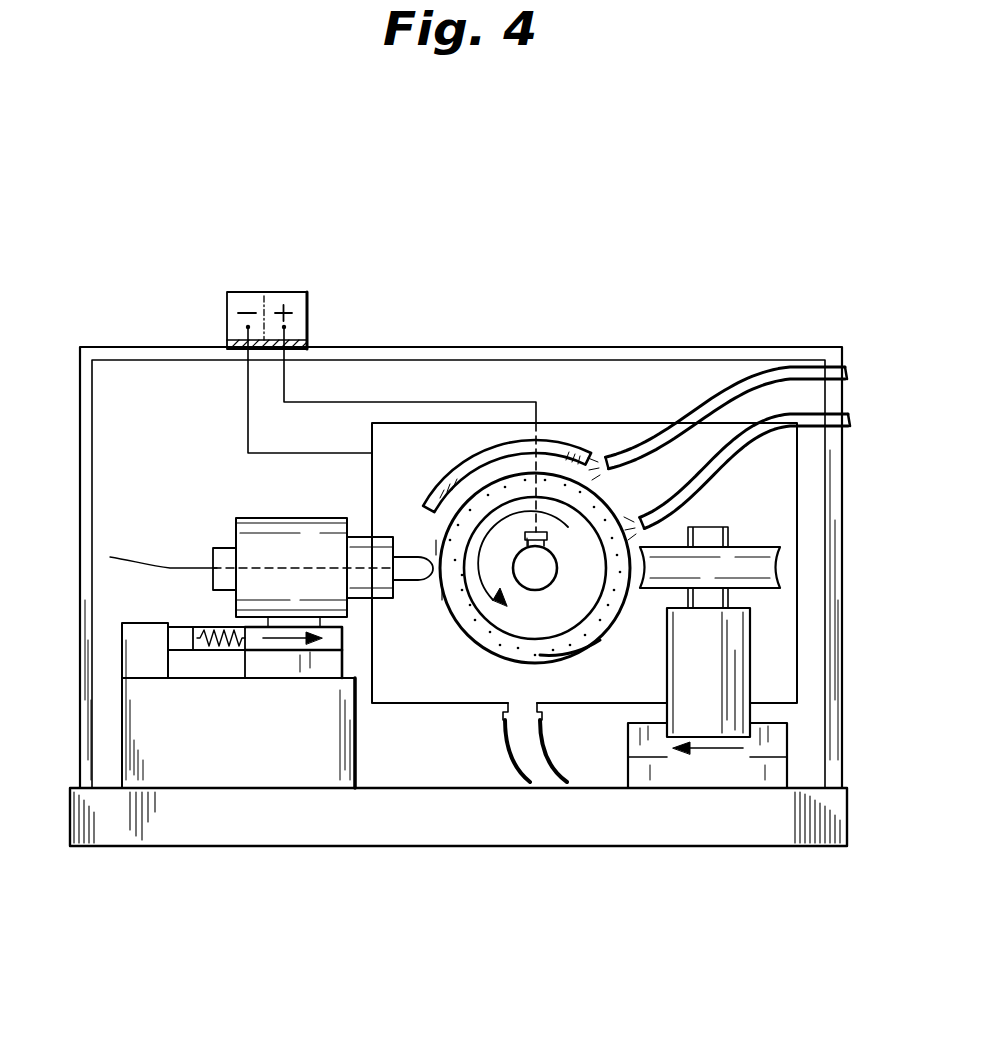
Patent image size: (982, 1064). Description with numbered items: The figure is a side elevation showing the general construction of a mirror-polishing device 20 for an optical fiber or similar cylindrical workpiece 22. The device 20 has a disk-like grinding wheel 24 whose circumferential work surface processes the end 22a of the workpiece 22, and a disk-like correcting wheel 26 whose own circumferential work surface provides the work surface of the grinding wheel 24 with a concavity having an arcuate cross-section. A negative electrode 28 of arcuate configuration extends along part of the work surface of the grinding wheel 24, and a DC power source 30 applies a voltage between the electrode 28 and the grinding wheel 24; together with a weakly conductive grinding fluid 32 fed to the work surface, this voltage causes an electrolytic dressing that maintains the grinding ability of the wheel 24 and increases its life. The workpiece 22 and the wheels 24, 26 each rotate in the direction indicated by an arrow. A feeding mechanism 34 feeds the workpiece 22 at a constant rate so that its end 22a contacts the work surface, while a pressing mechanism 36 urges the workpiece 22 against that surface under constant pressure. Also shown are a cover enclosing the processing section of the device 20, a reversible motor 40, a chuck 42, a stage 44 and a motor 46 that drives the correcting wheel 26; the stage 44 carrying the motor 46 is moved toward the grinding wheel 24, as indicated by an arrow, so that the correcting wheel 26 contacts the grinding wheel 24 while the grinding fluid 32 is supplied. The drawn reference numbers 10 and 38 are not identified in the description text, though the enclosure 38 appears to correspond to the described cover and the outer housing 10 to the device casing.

The housing 10 is at (147, 566).
The mirror-polishing device 20 is at (820, 232).
The workpiece 22 is at (432, 590).
The end of the workpiece 22a is at (432, 585).
The grinding wheel 24 is at (569, 662).
The correcting wheel 26 is at (655, 547).
The negative electrode 28 is at (507, 450).
The DC power source 30 is at (312, 292).
The grinding fluid 32 is at (788, 418).
The feeding mechanism 34 is at (328, 640).
The pressing mechanism 36 is at (190, 637).
The inner housing 38 is at (593, 423).
The reversible motor 40 is at (257, 538).
The chuck 42 is at (393, 600).
The stage 44 is at (773, 743).
The motor 46 is at (698, 672).